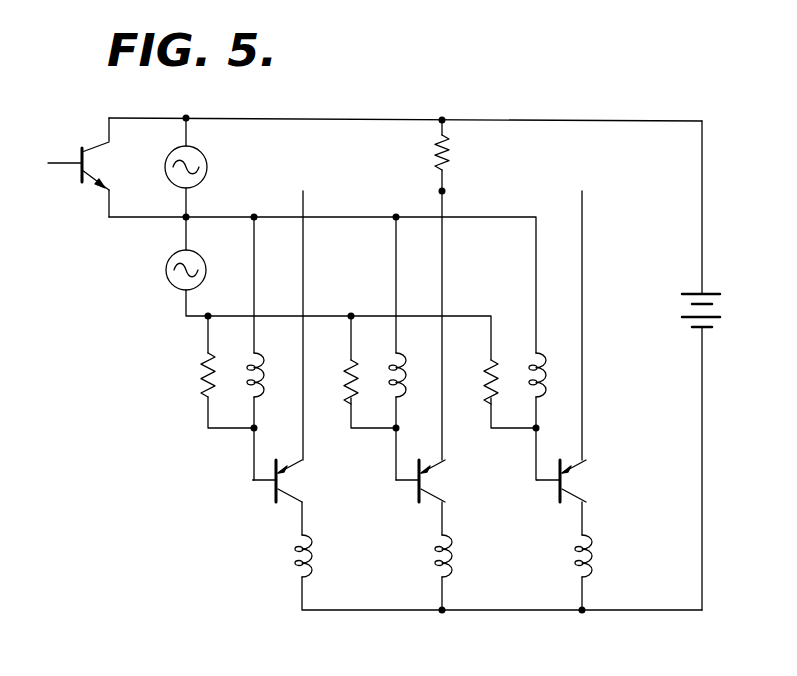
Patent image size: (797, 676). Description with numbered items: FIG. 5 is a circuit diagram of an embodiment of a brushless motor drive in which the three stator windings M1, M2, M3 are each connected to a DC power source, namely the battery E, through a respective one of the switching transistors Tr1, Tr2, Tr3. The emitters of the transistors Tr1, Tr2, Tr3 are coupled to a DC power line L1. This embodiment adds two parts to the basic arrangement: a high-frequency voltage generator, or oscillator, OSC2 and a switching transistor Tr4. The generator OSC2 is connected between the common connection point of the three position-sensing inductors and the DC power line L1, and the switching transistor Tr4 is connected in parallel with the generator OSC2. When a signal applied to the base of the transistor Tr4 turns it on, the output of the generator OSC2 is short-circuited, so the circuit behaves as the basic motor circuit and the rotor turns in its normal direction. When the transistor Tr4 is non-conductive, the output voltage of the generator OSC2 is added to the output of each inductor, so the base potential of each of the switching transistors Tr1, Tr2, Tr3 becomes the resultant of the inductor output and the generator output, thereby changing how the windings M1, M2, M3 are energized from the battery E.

The DC power line L1 is at (598, 120).
The battery E is at (712, 304).
The switching transistor Tr4 is at (80, 154).
The high-frequency voltage generator OSC2 is at (207, 167).
The switching transistor Tr1 is at (267, 493).
The switching transistor Tr2 is at (420, 493).
The switching transistor Tr3 is at (561, 493).
The stator winding M1 is at (312, 560).
The stator winding M2 is at (452, 560).
The stator winding M3 is at (592, 560).